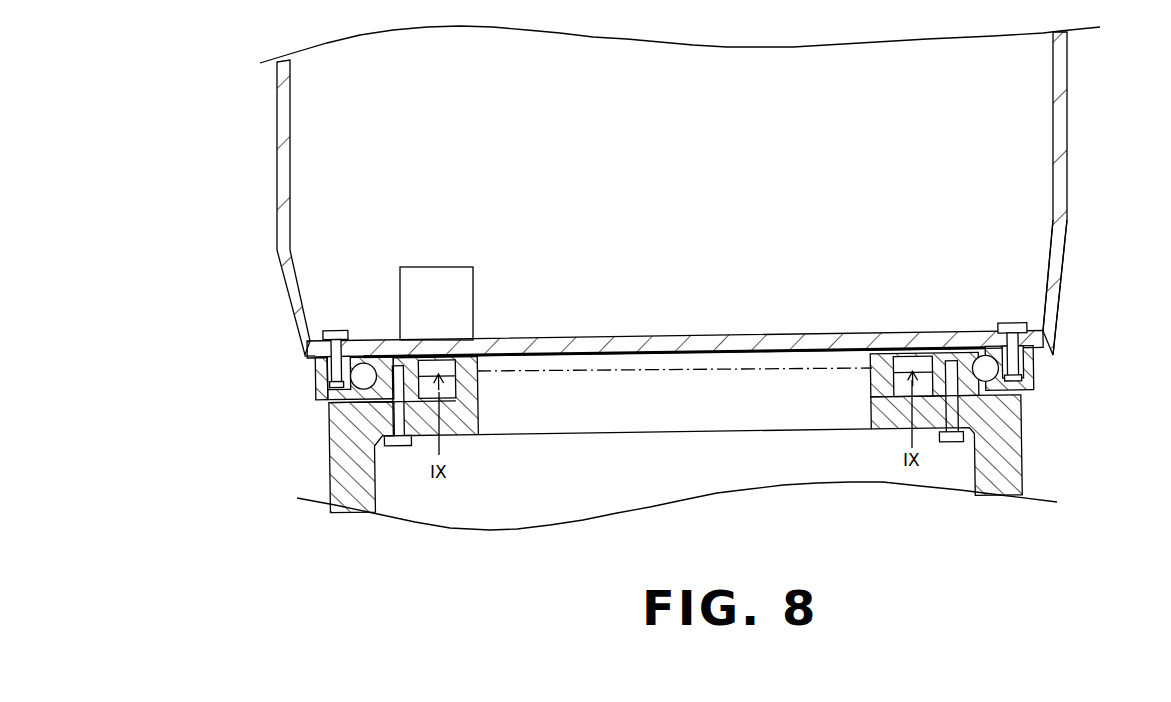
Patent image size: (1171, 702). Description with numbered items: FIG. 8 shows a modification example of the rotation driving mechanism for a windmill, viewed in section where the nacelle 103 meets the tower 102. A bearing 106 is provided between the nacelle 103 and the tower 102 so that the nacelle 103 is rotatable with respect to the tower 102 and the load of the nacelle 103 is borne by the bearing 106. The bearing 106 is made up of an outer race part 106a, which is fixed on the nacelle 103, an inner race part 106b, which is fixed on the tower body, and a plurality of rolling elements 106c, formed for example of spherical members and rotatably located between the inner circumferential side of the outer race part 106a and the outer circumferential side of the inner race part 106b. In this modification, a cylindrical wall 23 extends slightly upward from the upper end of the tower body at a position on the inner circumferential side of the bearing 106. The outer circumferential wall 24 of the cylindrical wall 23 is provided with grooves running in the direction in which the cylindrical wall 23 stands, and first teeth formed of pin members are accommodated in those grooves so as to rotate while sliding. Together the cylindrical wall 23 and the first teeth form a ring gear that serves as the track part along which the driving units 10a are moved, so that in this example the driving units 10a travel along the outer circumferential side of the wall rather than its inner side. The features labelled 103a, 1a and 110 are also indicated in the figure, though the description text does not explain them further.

The nacelle 103 is at (1077, 150).
The lower portion of side wall 103a is at (975, 333).
The driving unit 10a is at (462, 248).
The tray body 1a is at (545, 272).
The outer circumferential wall 24 is at (912, 342).
The cylindrical wall 23 is at (872, 390).
The tower 102 is at (998, 477).
The bearing 106 is at (290, 393).
The outer race part 106a is at (322, 372).
The inner race part 106b is at (407, 355).
The rolling elements 106c is at (380, 341).
The right clamp unit 110 is at (1080, 358).